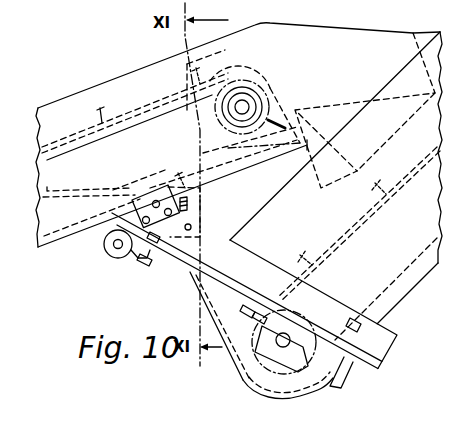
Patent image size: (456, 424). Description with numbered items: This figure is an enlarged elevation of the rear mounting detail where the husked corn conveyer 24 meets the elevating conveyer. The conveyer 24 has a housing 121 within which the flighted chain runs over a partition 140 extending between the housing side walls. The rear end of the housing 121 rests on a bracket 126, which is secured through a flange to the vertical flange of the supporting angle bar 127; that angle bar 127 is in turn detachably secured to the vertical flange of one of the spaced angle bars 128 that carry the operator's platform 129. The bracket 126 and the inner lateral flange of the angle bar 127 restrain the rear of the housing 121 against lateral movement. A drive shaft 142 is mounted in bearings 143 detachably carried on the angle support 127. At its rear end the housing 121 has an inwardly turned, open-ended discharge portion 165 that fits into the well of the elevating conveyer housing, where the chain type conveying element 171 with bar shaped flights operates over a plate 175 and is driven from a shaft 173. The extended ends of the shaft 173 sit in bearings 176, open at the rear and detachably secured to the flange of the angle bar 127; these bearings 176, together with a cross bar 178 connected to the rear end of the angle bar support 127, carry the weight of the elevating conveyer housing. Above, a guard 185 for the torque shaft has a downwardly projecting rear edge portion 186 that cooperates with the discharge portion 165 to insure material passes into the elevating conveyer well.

The housing 121 is at (151, 64).
The conveyer 24 is at (102, 108).
The partition 140 is at (153, 101).
The operator's platform 129 is at (94, 178).
The bracket 126 is at (157, 182).
The angle bar 128 is at (202, 208).
The supporting angle bar 127 is at (182, 263).
The shaft 142 is at (118, 258).
The bearings 143 is at (104, 245).
The housing or guard 185 is at (275, 74).
The discharge portion 165 is at (396, 42).
The rear edge portion 186 is at (317, 182).
The conveying element 171 is at (307, 253).
The plate 175 is at (383, 207).
The shaft 173 is at (290, 339).
The bearings 176 is at (240, 380).
The cross bar 178 is at (358, 375).